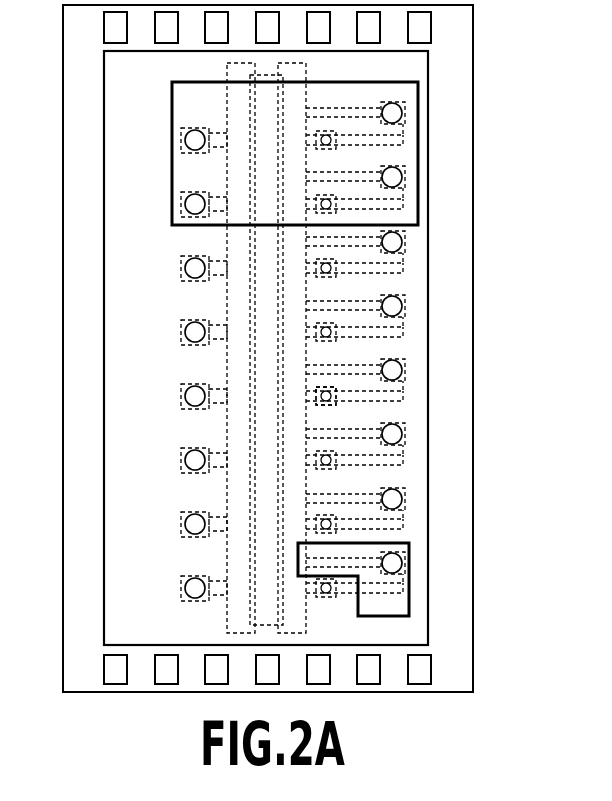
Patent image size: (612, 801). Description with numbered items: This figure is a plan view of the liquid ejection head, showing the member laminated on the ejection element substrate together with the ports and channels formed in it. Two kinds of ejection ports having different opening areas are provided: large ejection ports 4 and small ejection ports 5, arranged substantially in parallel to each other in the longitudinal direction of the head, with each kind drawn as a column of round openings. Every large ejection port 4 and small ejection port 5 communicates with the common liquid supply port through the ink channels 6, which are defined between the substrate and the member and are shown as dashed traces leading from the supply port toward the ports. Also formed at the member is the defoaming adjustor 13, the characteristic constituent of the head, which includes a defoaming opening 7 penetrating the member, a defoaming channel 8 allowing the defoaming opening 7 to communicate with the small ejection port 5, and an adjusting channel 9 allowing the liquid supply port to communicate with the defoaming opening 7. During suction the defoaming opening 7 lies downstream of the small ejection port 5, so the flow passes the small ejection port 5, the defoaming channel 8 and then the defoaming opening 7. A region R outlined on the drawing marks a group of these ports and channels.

The large ejection port 4 is at (188, 462).
The small ejection port 5 is at (332, 459).
The ink channel 6 is at (217, 388).
The defoaming opening 7 is at (402, 304).
The defoaming channel 8 is at (390, 329).
The adjusting channel 9 is at (366, 302).
The defoaming adjustor 13 is at (410, 585).
The region R is at (419, 150).